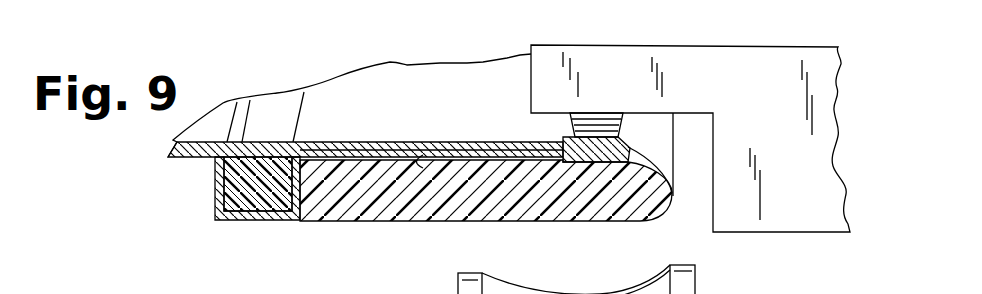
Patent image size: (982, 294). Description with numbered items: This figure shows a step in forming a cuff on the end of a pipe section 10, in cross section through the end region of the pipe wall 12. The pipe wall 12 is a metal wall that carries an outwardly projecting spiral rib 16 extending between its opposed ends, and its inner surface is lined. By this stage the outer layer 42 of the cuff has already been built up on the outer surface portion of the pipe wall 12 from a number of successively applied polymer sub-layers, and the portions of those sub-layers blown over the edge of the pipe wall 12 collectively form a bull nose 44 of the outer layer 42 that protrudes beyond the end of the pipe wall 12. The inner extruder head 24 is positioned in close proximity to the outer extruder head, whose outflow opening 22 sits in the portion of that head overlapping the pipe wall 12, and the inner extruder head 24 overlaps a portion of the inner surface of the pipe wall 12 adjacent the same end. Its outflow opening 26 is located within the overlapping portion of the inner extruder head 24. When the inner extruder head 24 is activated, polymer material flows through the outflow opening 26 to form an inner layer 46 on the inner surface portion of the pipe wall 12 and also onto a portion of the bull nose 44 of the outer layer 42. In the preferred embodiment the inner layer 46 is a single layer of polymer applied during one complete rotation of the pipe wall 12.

The pipe section 10 is at (362, 64).
The pipe wall 12 is at (428, 142).
The spiral rib 16 is at (212, 229).
The outflow opening 22 is at (609, 279).
The inner extruder head 24 is at (752, 62).
The outflow opening 26 is at (613, 113).
The outer layer 42 is at (378, 208).
The bull nose 44 is at (637, 203).
The inner layer 46 is at (567, 138).